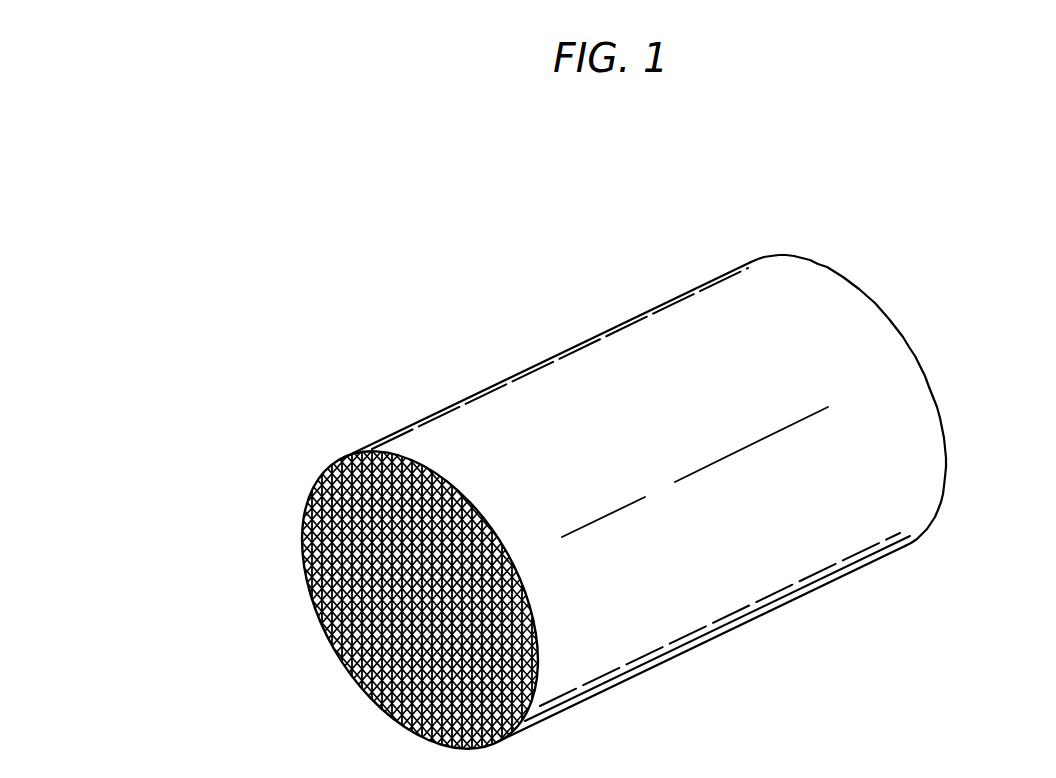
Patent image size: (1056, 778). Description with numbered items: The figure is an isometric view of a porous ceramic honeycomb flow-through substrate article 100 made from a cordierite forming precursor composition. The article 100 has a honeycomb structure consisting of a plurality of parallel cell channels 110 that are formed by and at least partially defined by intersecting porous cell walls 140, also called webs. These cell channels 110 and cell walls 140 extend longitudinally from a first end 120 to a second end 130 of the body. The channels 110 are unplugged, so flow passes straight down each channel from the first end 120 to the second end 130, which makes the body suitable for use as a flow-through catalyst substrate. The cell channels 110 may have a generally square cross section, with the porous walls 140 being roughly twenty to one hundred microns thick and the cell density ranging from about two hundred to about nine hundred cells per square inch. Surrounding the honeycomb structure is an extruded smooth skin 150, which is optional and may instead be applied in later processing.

The porous ceramic honeycomb flow-through substrate article 100 is at (952, 477).
The cell channels 110 is at (304, 568).
The first end 120 is at (305, 510).
The second end 130 is at (867, 293).
The cell walls 140 is at (328, 638).
The extruded smooth skin 150 is at (578, 382).